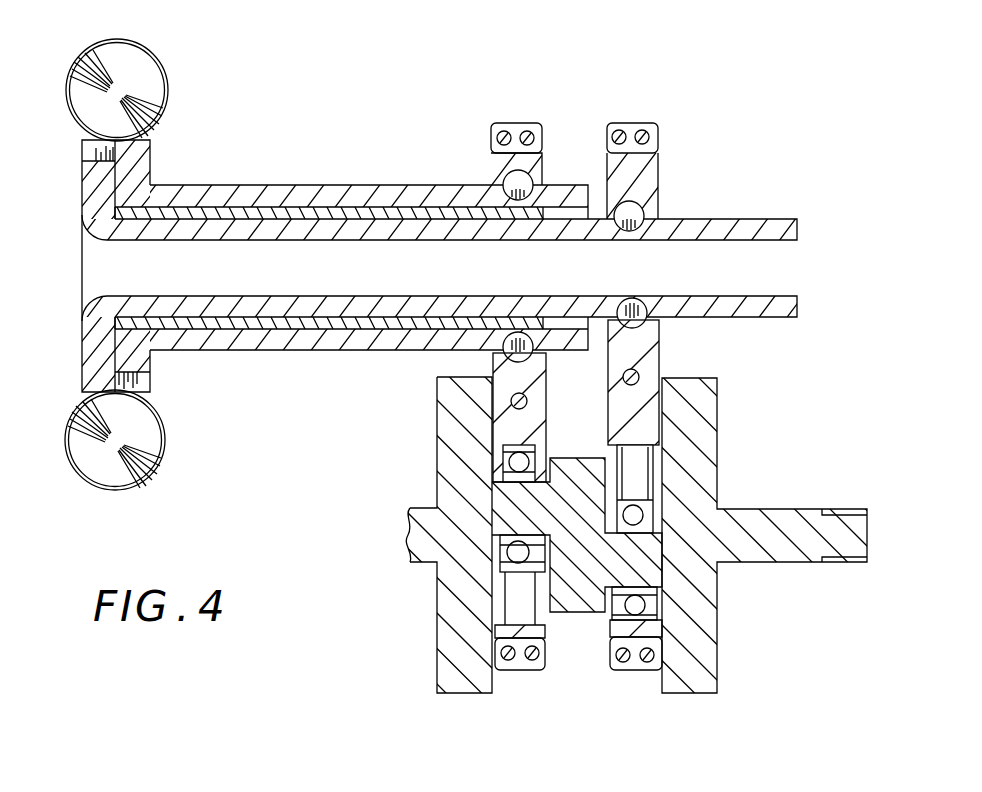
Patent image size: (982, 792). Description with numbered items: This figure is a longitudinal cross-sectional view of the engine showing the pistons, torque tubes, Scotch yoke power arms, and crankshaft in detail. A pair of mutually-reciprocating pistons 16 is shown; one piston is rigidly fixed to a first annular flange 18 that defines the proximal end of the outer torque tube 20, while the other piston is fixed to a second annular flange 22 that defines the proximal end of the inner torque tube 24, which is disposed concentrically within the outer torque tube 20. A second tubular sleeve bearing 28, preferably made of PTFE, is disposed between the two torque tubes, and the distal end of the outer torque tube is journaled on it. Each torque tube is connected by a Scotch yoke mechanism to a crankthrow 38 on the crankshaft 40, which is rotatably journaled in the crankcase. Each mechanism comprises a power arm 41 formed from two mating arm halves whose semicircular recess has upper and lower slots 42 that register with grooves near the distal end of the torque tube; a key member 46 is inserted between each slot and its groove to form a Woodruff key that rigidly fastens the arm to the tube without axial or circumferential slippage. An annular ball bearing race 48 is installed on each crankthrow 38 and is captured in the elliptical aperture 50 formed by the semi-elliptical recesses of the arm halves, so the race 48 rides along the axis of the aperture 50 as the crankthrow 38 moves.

The pistons 16 is at (146, 78).
The first annular flange 18 is at (142, 153).
The outer torque tube 20 is at (284, 186).
The second annular flange 22 is at (86, 191).
The inner torque tube 24 is at (287, 302).
The second tubular sleeve bearing 28 is at (213, 211).
The crankthrow 38 is at (520, 507).
The crankshaft 40 is at (410, 508).
The power arm 41 is at (492, 160).
The slots 42 is at (538, 185).
The key member 46 is at (503, 183).
The ball bearing race 48 is at (528, 442).
The elliptical aperture 50 is at (645, 456).